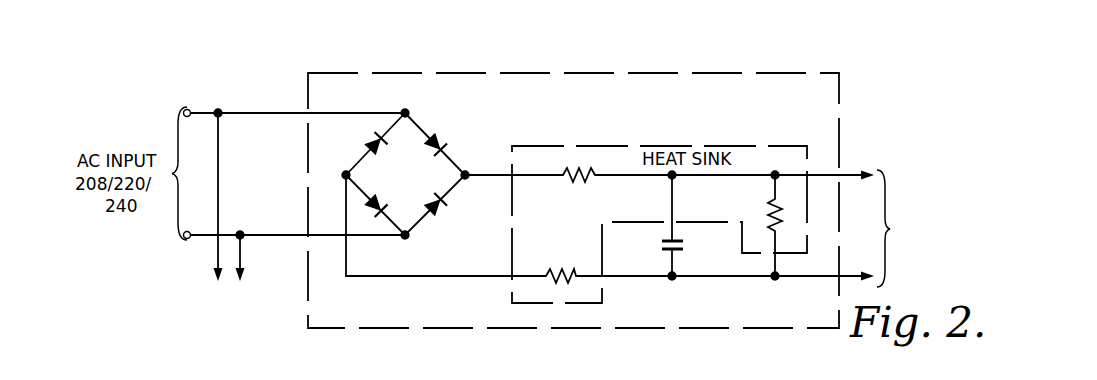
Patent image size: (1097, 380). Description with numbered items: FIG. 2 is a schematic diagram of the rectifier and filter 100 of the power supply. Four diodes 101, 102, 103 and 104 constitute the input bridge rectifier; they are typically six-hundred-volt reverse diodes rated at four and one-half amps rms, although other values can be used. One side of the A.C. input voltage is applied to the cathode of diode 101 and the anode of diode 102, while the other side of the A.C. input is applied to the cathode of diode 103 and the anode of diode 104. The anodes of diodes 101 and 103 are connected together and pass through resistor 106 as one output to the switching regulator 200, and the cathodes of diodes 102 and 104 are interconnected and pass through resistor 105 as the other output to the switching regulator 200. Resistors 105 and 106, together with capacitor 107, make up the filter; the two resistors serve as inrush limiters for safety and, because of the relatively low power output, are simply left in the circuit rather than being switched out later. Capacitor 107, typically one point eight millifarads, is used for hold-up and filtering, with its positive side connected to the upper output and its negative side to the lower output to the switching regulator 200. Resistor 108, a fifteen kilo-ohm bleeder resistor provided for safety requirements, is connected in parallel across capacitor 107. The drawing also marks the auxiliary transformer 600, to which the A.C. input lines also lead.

The rectifier and filter 100 is at (759, 102).
The diode 101 is at (360, 143).
The diode 102 is at (453, 144).
The diode 103 is at (385, 198).
The diode 104 is at (448, 210).
The resistor 105 is at (578, 167).
The resistor 106 is at (560, 264).
The capacitor 107 is at (652, 225).
The bleeder resistor 108 is at (757, 225).
The switching regulator 200 is at (926, 228).
The auxiliary transformer 600 is at (208, 228).